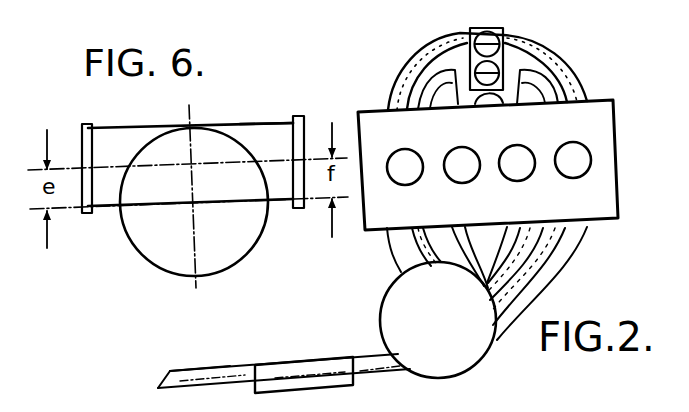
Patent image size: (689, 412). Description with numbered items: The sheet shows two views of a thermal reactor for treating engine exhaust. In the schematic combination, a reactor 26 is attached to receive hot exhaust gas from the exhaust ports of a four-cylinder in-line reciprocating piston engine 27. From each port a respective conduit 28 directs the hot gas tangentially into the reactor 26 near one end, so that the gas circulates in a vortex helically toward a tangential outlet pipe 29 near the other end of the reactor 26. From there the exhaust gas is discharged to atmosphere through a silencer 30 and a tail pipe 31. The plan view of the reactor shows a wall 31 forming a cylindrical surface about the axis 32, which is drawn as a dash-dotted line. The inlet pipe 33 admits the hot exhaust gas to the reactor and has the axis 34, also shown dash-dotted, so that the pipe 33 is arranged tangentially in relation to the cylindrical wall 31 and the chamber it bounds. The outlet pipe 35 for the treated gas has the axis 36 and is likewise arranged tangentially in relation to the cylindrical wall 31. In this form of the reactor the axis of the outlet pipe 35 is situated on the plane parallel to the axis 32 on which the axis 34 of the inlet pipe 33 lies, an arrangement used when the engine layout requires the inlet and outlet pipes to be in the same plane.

In FIG. 2, the reactor 26 is at (484, 356).
In FIG. 2, the in-line reciprocating piston engine 27 is at (623, 156).
In FIG. 2, the conduit 28 is at (452, 238).
In FIG. 2, the tangential outlet pipe 29 is at (368, 370).
In FIG. 2, the silencer 30 is at (295, 368).
In FIG. 6, the tail pipe 31 is at (124, 232).
In FIG. 2, the tail pipe 31 is at (228, 375).
In FIG. 6, the axis 32 is at (193, 200).
In FIG. 6, the inlet pipe 33 is at (135, 127).
In FIG. 6, the axis of the inlet pipe 34 is at (60, 168).
In FIG. 6, the outlet pipe 35 is at (273, 124).
In FIG. 6, the axis of the outlet pipe 36 is at (310, 158).